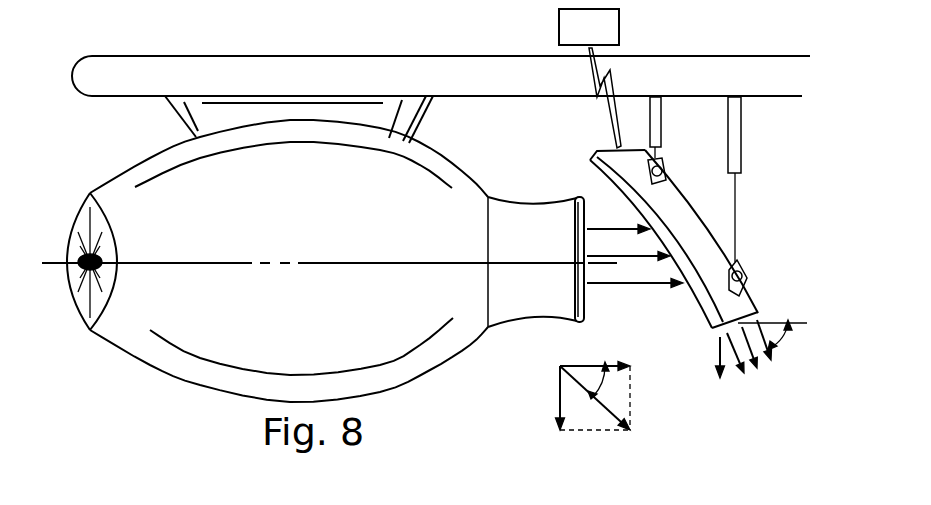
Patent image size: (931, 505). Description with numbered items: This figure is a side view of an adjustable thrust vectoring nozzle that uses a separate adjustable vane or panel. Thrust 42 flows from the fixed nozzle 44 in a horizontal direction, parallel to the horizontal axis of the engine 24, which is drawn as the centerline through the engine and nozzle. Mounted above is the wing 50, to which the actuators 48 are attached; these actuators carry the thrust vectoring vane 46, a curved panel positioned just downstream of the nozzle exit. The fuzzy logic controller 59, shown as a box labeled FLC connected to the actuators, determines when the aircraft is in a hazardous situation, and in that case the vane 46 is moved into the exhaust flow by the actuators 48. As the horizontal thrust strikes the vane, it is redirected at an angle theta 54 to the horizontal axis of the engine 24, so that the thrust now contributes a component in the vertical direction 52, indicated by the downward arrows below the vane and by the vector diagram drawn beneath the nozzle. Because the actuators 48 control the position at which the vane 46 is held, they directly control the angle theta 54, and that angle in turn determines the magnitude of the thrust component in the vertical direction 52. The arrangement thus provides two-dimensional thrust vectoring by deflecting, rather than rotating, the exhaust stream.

The horizontal axis of the engine 24 is at (367, 264).
The thrust 42 is at (635, 288).
The fixed nozzle 44 is at (528, 317).
The thrust vectoring vane 46 is at (597, 152).
The actuators 48 is at (728, 127).
The wing 50 is at (782, 97).
The vertical direction thrust component 52 is at (558, 393).
The angle theta 54 is at (604, 374).
The fuzzy logic controller 59 is at (619, 18).